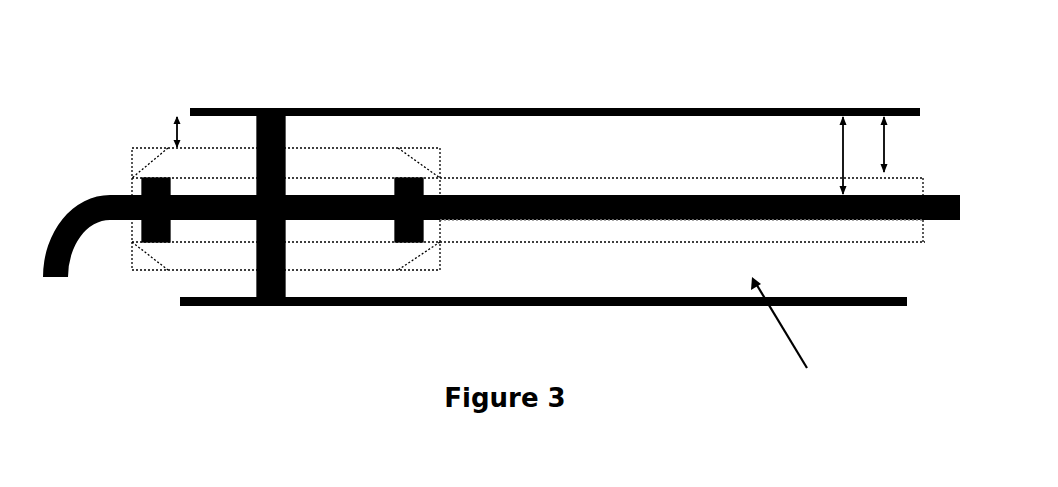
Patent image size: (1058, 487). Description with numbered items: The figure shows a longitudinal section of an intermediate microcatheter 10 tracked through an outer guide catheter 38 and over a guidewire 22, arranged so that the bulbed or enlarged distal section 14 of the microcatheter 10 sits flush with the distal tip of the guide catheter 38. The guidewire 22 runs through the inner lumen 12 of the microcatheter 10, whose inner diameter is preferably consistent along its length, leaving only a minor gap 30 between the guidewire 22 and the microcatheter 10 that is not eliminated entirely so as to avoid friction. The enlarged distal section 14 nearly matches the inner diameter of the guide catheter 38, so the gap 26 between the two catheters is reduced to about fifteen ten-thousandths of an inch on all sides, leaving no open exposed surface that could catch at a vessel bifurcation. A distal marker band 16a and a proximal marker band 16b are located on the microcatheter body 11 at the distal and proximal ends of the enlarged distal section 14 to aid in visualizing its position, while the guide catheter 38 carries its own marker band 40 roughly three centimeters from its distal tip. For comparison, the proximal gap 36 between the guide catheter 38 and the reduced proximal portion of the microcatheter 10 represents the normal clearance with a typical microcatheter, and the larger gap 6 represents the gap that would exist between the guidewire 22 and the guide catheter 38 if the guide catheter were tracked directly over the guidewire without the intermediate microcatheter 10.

The gap size 6 is at (837, 147).
The intermediate microcatheter 10 is at (786, 339).
The microcatheter body 11 is at (888, 240).
The inner lumen 12 is at (535, 232).
The enlarged distal section 14 is at (338, 165).
The distal marker band 16a is at (150, 244).
The proximal marker band 16b is at (418, 243).
The guidewire 22 is at (672, 217).
The gap size 26 is at (173, 133).
The gap 30 is at (677, 187).
The proximal gap 36 is at (878, 138).
The outer guide catheter 38 is at (852, 305).
The marker band 40 is at (286, 300).